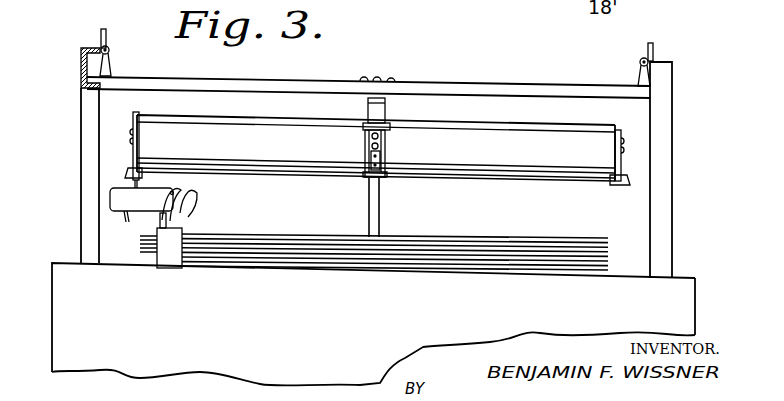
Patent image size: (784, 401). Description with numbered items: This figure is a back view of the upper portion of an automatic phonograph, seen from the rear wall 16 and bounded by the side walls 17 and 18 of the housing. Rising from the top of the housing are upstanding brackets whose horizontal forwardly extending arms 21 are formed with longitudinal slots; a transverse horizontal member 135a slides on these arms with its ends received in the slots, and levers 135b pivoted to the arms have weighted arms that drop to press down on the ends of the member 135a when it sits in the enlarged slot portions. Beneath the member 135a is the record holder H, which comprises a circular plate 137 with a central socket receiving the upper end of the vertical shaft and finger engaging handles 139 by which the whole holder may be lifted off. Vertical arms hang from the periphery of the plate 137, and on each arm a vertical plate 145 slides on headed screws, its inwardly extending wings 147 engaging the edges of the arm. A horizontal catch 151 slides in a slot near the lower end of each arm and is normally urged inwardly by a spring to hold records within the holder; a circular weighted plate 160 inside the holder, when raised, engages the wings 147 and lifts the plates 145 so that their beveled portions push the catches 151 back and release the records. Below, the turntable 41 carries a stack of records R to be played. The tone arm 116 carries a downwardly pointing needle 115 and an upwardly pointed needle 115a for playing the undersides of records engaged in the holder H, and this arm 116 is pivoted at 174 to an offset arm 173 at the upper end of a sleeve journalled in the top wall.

The rear wall 16 is at (193, 368).
The side wall 17 is at (695, 307).
The side wall 18 is at (52, 300).
The horizontal forwardly extending arm 21 is at (81, 101).
The turntable 41 is at (538, 278).
The holder H is at (280, 116).
The records R is at (313, 175).
The downwardly pointing needle 115 is at (127, 216).
The upwardly pointed needle 115a is at (131, 182).
The arm 116 is at (141, 200).
The transverse horizontal member 135a is at (535, 86).
The lever 135b is at (108, 41).
The circular plate 137 is at (232, 115).
The finger engaging handle 139 is at (386, 106).
The vertical plate 145 is at (384, 151).
The inwardly extending wing 147 is at (148, 113).
The horizontal catch 151 is at (146, 171).
The circular weighted plate 160 is at (248, 159).
The offset arm 173 is at (182, 218).
The pivot 174 is at (172, 193).